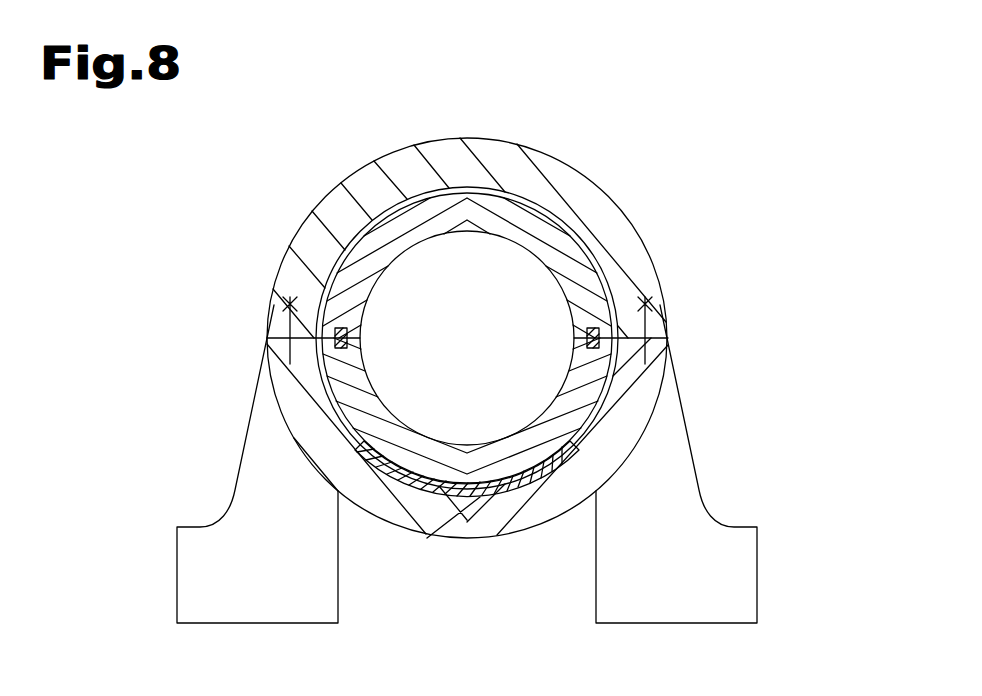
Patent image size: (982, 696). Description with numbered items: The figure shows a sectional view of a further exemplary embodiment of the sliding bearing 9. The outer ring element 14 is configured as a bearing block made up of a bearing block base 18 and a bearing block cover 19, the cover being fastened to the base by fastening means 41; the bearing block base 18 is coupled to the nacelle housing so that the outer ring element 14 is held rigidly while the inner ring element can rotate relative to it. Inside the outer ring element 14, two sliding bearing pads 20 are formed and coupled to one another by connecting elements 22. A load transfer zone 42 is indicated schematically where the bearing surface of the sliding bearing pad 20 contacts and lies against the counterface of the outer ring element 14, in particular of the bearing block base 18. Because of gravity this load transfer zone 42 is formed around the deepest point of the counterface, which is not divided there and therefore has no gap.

The sliding bearing 9 is at (775, 121).
The outer ring element 14 is at (632, 477).
The bearing block base 18 is at (638, 403).
The bearing block cover 19 is at (378, 188).
The sliding bearing pad 20 is at (500, 213).
The connecting element 22 is at (335, 357).
The fastening means 41 is at (295, 337).
The load transfer zone 42 is at (418, 497).